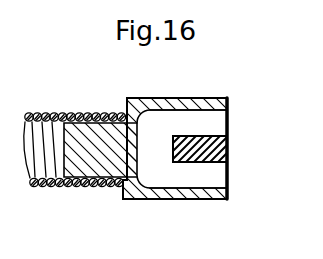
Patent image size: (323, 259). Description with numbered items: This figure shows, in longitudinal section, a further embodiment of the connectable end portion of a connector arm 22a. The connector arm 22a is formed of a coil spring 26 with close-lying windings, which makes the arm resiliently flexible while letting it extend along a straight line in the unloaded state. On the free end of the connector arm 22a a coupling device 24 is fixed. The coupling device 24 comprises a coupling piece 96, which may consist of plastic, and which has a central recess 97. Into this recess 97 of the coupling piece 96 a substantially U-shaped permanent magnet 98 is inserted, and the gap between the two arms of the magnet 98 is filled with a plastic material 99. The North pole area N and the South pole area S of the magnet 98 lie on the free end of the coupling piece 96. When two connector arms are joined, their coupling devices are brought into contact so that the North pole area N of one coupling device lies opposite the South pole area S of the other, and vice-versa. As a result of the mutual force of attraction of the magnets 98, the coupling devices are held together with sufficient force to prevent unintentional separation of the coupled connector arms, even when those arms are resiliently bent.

The connector arm 22a is at (46, 100).
The coupling device 24 is at (226, 88).
The coil spring 26 is at (53, 187).
The coupling piece 96 is at (144, 189).
The central recess 97 is at (148, 102).
The permanent magnet 98 is at (198, 178).
The plastic material 99 is at (227, 152).
The North pole area N is at (227, 120).
The South pole area S is at (227, 178).